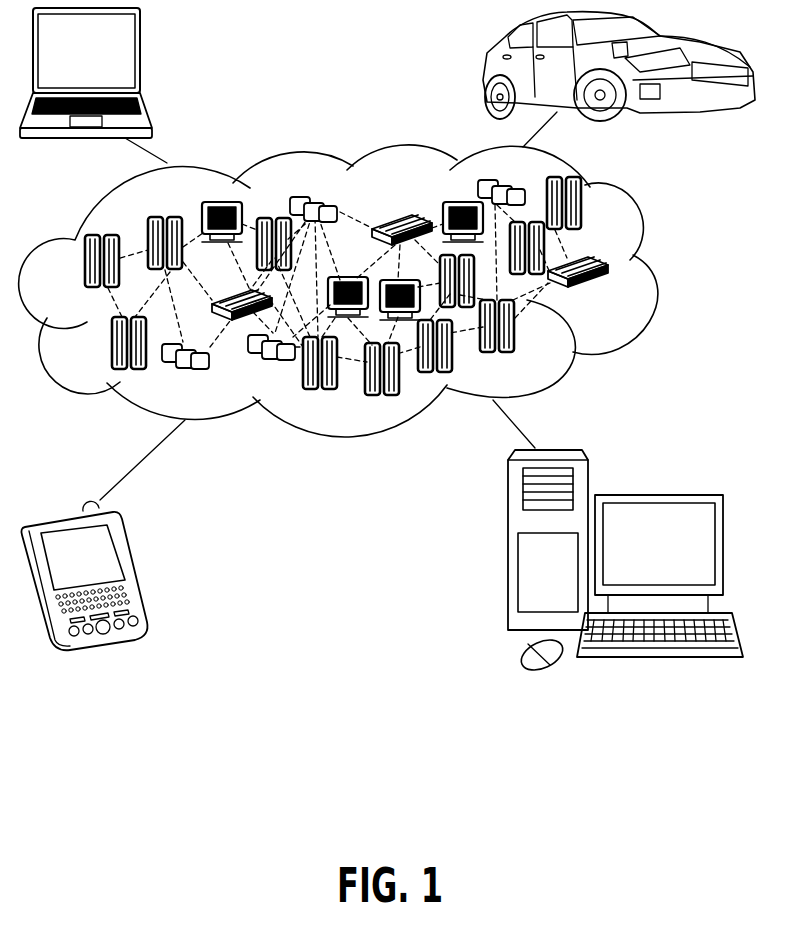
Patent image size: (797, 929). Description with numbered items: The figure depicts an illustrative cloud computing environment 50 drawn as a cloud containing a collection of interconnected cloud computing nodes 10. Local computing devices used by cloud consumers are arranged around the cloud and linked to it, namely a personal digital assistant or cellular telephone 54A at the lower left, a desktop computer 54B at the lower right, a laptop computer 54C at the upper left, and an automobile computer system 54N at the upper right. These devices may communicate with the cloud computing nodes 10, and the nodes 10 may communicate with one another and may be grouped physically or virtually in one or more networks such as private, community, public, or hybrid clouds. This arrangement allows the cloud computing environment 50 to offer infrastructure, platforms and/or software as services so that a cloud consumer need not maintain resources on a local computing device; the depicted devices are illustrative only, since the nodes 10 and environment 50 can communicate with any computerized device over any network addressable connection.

The cloud computing nodes 10 is at (618, 293).
The cloud computing environment 50 is at (655, 272).
The personal digital assistant (PDA) or cellular telephone 54A is at (131, 568).
The desktop computer 54B is at (658, 495).
The laptop computer 54C is at (142, 58).
The automobile computer system 54N is at (483, 70).